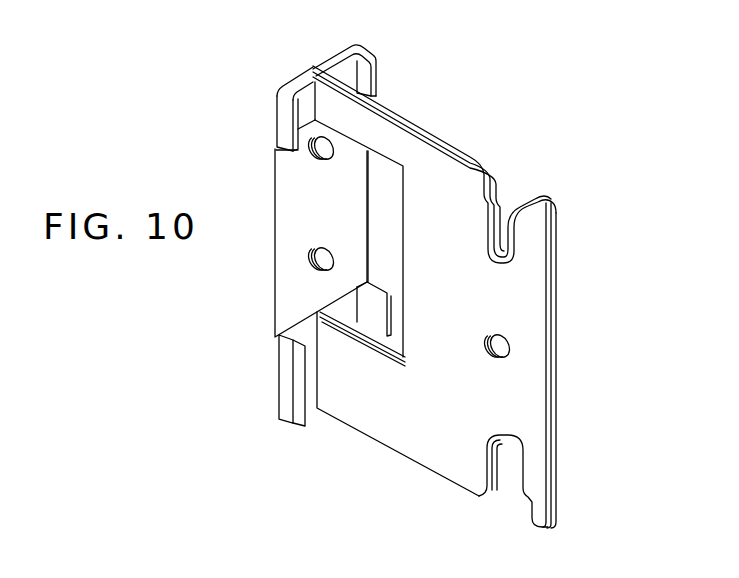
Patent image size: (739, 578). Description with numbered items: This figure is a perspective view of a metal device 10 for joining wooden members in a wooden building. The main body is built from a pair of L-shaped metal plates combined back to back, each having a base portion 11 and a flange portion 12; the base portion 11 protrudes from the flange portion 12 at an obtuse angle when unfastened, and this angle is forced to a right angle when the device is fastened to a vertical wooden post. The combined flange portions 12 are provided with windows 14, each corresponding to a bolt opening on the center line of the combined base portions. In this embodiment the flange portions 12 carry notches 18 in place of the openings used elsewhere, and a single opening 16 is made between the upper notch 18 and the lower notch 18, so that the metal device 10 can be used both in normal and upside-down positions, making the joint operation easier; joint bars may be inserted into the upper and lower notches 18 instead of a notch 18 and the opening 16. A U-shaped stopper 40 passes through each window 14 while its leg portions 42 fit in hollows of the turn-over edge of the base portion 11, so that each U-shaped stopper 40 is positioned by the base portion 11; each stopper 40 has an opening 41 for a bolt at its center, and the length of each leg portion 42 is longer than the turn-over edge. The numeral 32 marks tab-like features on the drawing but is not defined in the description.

The metal device 10 is at (518, 103).
The base portion 11 is at (293, 88).
The flange portion 12 is at (535, 392).
The window 14 is at (392, 158).
The opening 16 is at (509, 338).
The notch 18 is at (500, 214).
The bent tabs 32 is at (280, 110).
The U-shaped stopper 40 is at (298, 298).
The opening for bolt 41 is at (313, 153).
The leg portion 42 is at (282, 152).